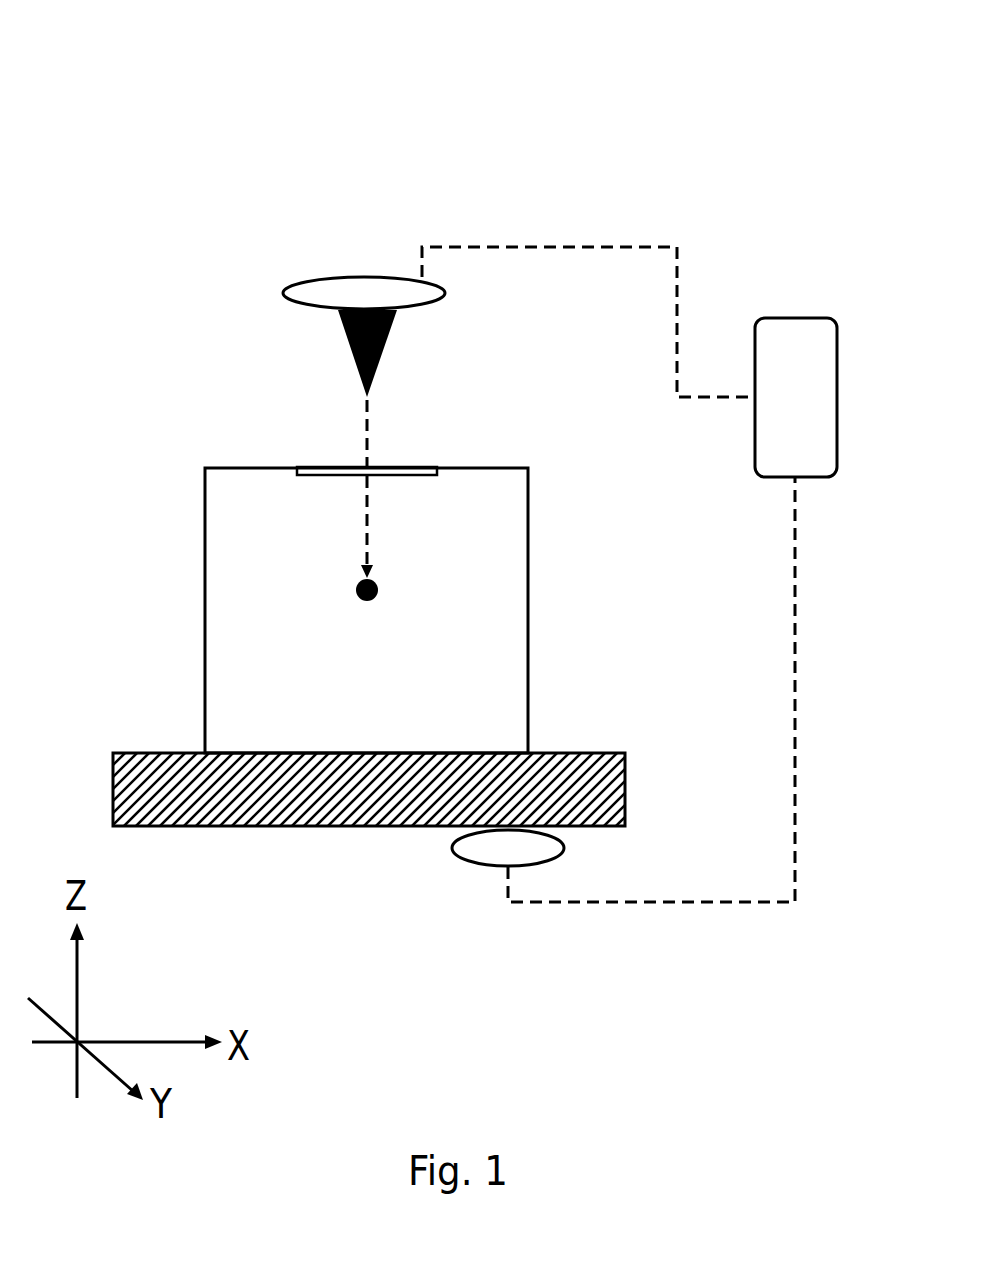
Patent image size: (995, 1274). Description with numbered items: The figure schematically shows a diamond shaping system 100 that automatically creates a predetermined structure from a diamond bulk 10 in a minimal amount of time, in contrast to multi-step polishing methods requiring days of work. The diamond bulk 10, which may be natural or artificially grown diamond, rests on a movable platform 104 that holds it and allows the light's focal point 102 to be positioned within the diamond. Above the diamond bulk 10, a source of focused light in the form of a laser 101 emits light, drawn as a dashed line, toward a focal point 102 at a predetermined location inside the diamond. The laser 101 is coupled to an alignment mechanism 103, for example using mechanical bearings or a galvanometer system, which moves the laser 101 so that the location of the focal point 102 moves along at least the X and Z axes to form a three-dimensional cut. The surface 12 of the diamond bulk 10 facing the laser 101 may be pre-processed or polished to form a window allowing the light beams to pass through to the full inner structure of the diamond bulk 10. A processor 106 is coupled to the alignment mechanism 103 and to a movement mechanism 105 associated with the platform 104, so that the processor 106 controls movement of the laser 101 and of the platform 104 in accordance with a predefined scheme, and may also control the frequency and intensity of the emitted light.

The diamond shaping system 100 is at (186, 103).
The diamond bulk 10 is at (528, 557).
The surface 12 is at (317, 465).
The laser 101 is at (380, 362).
The focal point 102 is at (355, 589).
The alignment mechanism 103 is at (283, 293).
The movable platform 104 is at (588, 752).
The movement mechanism 105 is at (563, 848).
The processor 106 is at (798, 318).